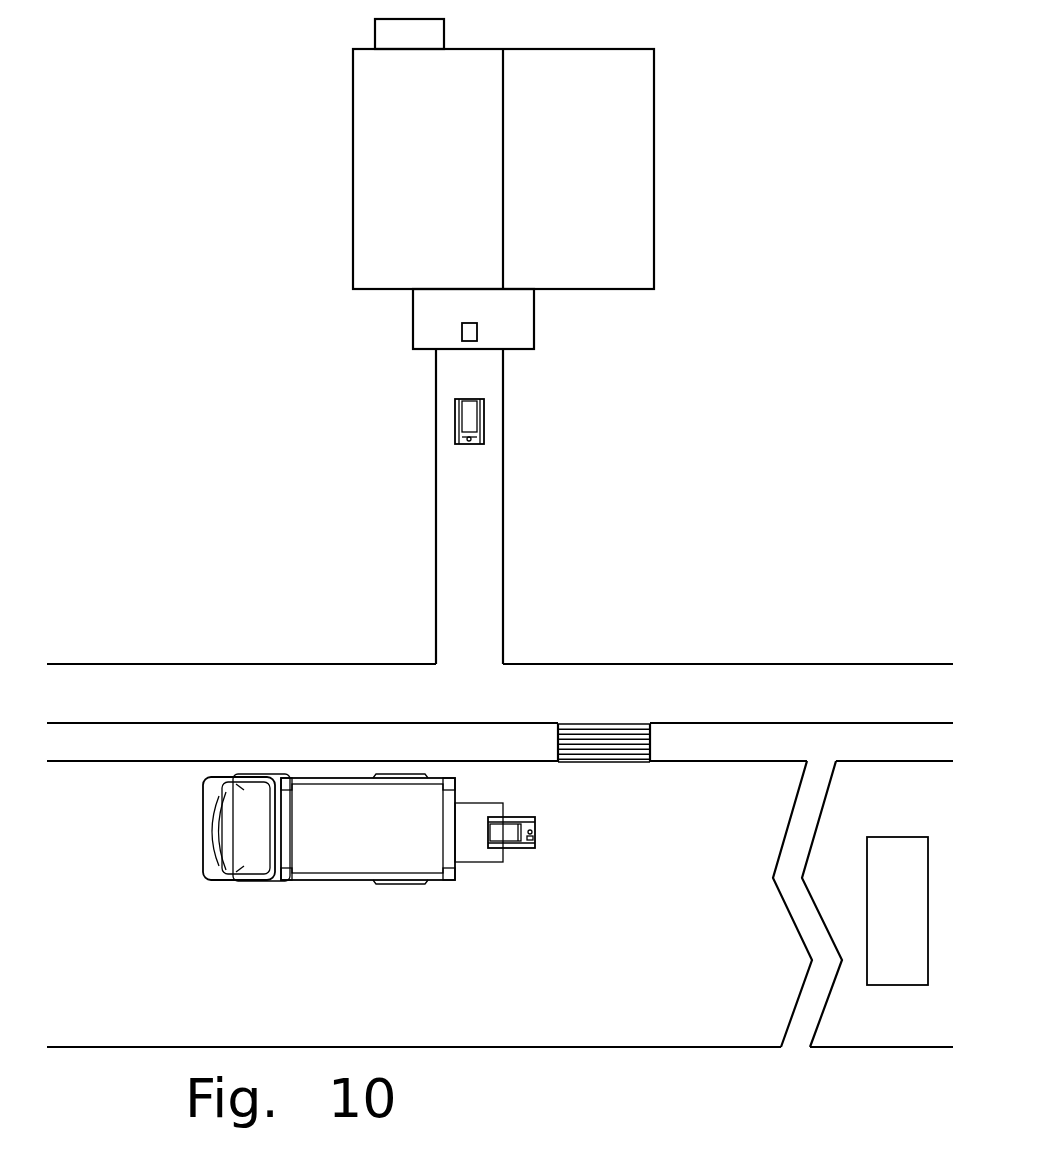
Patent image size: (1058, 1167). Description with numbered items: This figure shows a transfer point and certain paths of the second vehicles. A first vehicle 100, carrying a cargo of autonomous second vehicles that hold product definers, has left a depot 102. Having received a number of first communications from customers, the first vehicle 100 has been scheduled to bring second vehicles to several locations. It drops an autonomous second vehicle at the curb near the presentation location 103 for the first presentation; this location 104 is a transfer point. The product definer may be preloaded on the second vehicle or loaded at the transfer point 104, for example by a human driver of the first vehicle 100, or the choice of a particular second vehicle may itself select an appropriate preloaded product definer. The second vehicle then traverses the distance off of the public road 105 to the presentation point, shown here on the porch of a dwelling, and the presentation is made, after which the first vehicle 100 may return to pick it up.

The first vehicle 100 is at (362, 880).
The depot 102 is at (905, 985).
The presentation location 103 is at (462, 330).
The transfer point 104 is at (477, 862).
The public road 105 is at (97, 904).